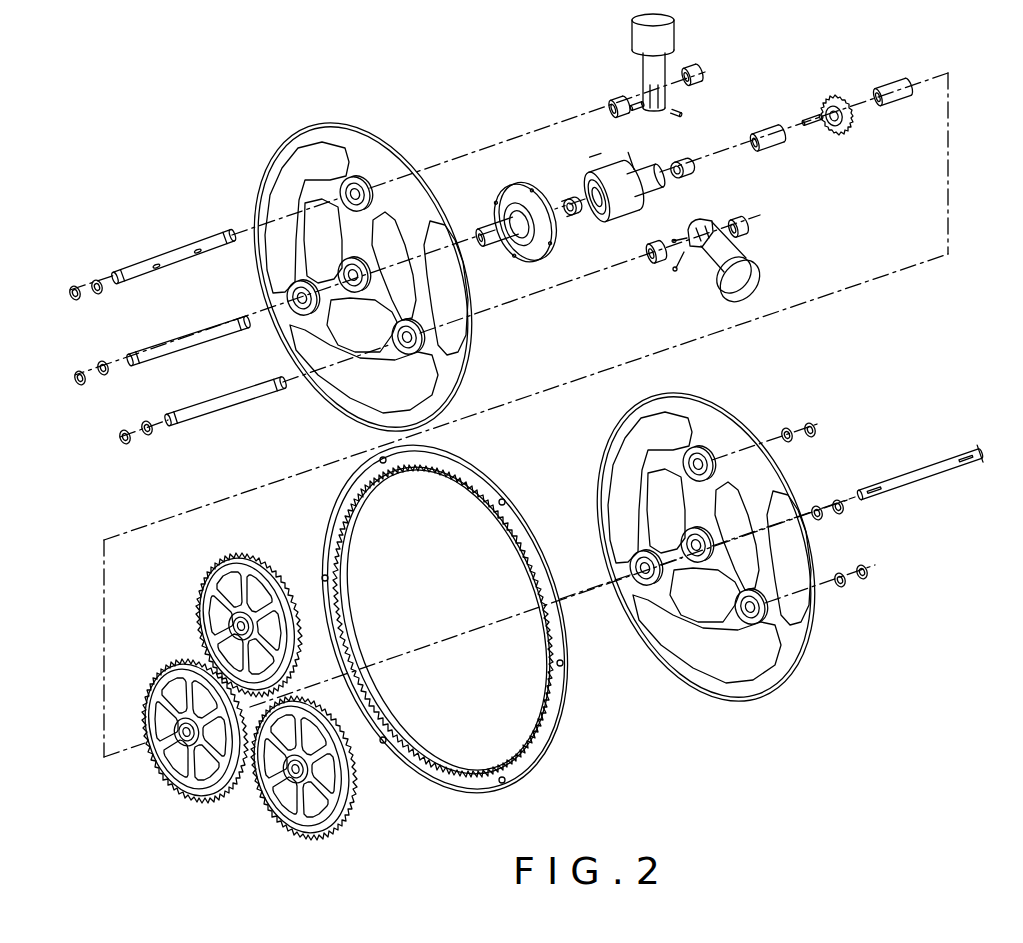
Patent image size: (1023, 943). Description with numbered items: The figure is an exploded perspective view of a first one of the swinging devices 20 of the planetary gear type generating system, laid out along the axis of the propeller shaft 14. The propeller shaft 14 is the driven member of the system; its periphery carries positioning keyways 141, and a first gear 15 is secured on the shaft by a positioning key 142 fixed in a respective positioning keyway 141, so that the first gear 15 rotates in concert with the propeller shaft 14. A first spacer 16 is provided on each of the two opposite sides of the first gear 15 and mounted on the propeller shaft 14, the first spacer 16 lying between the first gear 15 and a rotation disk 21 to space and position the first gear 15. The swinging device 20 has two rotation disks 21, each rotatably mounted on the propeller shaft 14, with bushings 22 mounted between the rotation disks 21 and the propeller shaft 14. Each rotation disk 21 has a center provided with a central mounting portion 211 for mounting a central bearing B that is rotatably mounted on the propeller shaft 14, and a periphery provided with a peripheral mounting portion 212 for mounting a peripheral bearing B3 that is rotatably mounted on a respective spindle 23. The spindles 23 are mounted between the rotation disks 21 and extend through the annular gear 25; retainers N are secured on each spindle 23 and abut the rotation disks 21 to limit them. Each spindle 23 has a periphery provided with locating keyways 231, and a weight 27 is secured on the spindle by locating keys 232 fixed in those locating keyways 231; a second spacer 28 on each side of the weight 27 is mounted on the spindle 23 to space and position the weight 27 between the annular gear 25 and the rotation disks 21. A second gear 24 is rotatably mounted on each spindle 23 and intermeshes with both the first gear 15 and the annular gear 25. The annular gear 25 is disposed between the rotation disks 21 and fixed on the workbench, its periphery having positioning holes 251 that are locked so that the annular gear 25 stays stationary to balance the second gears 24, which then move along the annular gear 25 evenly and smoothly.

The swinging device 20 is at (535, 433).
The rotation disk 21 is at (522, 405).
The central mounting portion 211 is at (454, 393).
The peripheral mounting portion 212 is at (537, 281).
The peripheral bearing B3 is at (347, 198).
The central bearing B is at (353, 293).
The spindle 23 is at (197, 333).
The locating keyway 231 is at (198, 258).
The retainer N is at (80, 286).
The bushing 22 is at (538, 200).
The weight 27 is at (640, 37).
The second spacer 28 is at (617, 98).
The locating key 232 is at (640, 105).
The positioning key 142 is at (815, 117).
The first gear 15 is at (846, 137).
The first spacer 16 is at (772, 144).
The propeller shaft 14 is at (932, 471).
The positioning keyway 141 is at (968, 465).
The second gear 24 is at (200, 586).
The annular gear 25 is at (453, 619).
The positioning hole 251 is at (563, 662).